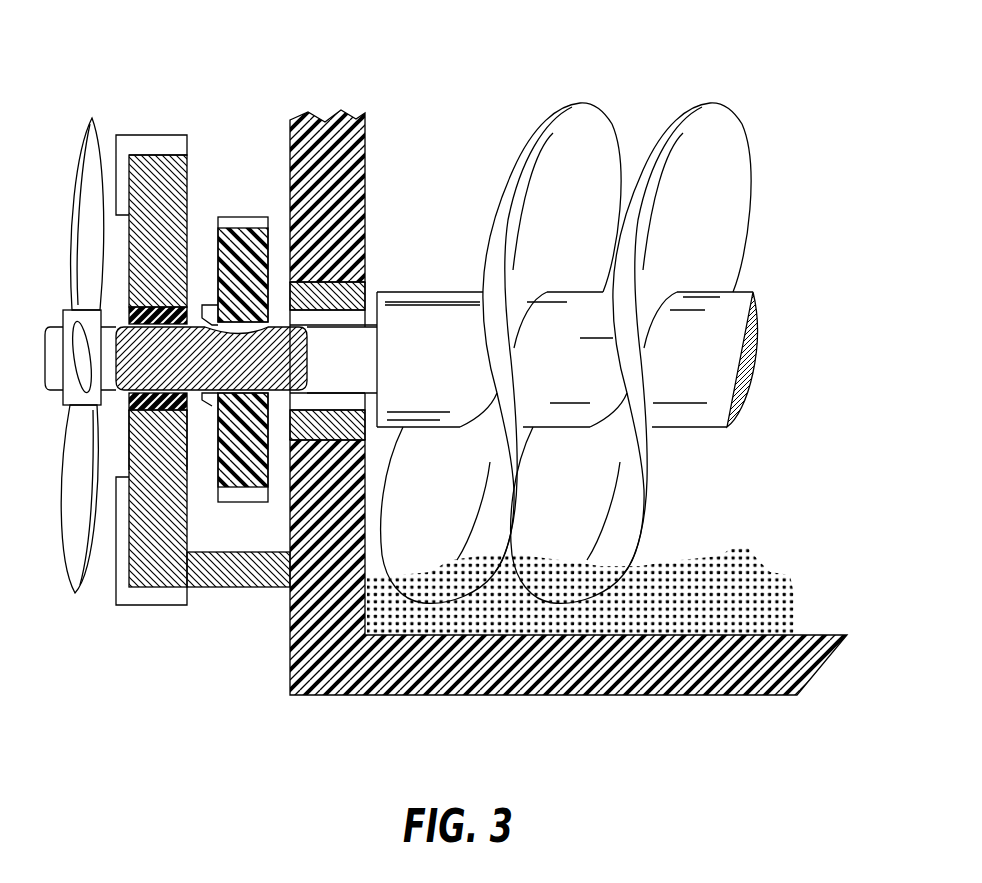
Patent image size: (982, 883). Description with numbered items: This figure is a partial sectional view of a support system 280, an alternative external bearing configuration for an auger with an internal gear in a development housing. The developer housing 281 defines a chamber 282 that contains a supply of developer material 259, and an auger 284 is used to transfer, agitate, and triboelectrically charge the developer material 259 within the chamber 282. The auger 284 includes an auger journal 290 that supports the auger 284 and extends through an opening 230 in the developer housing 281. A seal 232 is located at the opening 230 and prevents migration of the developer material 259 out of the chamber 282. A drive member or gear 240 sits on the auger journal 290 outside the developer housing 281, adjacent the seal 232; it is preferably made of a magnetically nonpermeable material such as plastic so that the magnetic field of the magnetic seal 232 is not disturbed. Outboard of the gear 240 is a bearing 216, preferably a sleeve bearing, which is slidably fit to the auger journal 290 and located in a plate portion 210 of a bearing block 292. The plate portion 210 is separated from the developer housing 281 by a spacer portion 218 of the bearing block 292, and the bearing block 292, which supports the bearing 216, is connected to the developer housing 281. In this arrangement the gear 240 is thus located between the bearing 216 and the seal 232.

The support system 280 is at (137, 97).
The auger 284 is at (772, 113).
The gear 240 is at (243, 215).
The seal 232 is at (365, 283).
The opening 230 is at (378, 303).
The bearing 216 is at (128, 410).
The bearing block 292 is at (128, 450).
The auger journal 290 is at (347, 372).
The plate portion 210 is at (155, 552).
The spacer portion 218 is at (237, 577).
The chamber 282 is at (754, 522).
The developer material 259 is at (735, 578).
The developer housing 281 is at (403, 668).